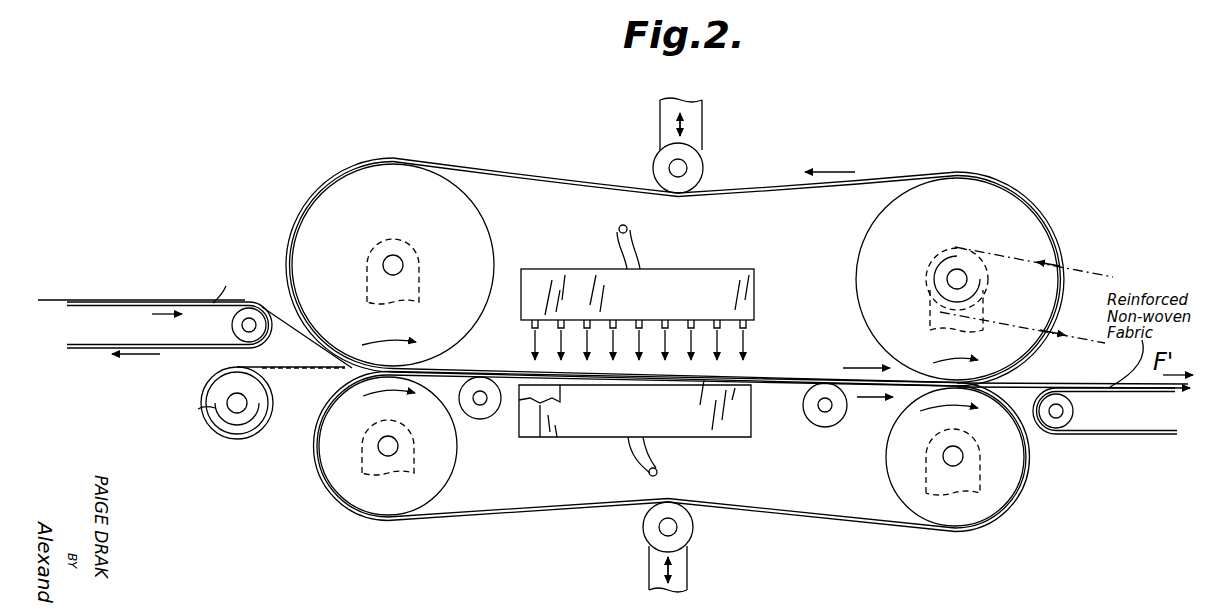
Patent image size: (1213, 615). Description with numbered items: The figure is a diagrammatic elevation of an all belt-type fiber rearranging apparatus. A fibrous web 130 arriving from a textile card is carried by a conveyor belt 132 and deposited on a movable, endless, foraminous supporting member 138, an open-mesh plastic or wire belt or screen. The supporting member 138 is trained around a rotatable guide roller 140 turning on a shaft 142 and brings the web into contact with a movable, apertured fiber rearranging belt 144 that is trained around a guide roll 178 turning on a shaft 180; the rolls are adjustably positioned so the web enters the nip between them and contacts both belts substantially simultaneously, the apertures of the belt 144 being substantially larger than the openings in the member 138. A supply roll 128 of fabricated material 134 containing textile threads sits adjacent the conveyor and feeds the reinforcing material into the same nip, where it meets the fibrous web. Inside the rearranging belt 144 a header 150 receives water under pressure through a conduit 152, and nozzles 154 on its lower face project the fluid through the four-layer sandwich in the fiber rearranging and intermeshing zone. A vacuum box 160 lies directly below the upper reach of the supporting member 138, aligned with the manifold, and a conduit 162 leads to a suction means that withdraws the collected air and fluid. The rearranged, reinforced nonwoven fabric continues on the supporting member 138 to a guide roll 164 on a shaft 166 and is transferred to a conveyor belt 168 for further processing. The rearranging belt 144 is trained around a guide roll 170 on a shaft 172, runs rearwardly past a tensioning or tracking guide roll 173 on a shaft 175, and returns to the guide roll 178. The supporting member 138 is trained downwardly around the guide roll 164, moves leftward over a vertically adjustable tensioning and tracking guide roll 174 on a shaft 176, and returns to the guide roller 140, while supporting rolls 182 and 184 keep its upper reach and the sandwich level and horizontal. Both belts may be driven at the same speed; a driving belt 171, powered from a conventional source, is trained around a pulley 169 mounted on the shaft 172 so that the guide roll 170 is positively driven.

The supply roll 128 is at (217, 430).
The fibrous web 130 is at (48, 300).
The conveyor belt 132 is at (90, 347).
The fabricated material 134 is at (321, 370).
The foraminous supporting member 138 is at (520, 510).
The guide roller 140 is at (342, 460).
The shaft 142 is at (388, 446).
The fiber rearranging belt 144 is at (523, 176).
The header 150 is at (650, 304).
The conduit 152 is at (635, 245).
The nozzles 154 is at (750, 328).
The vacuum box 160 is at (653, 416).
The conduit 162 is at (657, 472).
The guide roll 164 is at (993, 495).
The shaft 166 is at (963, 458).
The conveyor belt 168 is at (1158, 433).
The pulley 169 is at (947, 253).
The guide roll 170 is at (975, 192).
The driving belt 171 is at (1107, 256).
The shaft 172 is at (947, 280).
The tensioning or tracking guide roll 173 is at (655, 160).
The tensioning and tracking guide roll 174 is at (655, 533).
The shaft 175 is at (690, 172).
The shaft 176 is at (673, 527).
The guide roll 178 is at (347, 193).
The shaft 180 is at (396, 262).
The supporting roll 182 is at (490, 420).
The supporting roll 184 is at (828, 427).